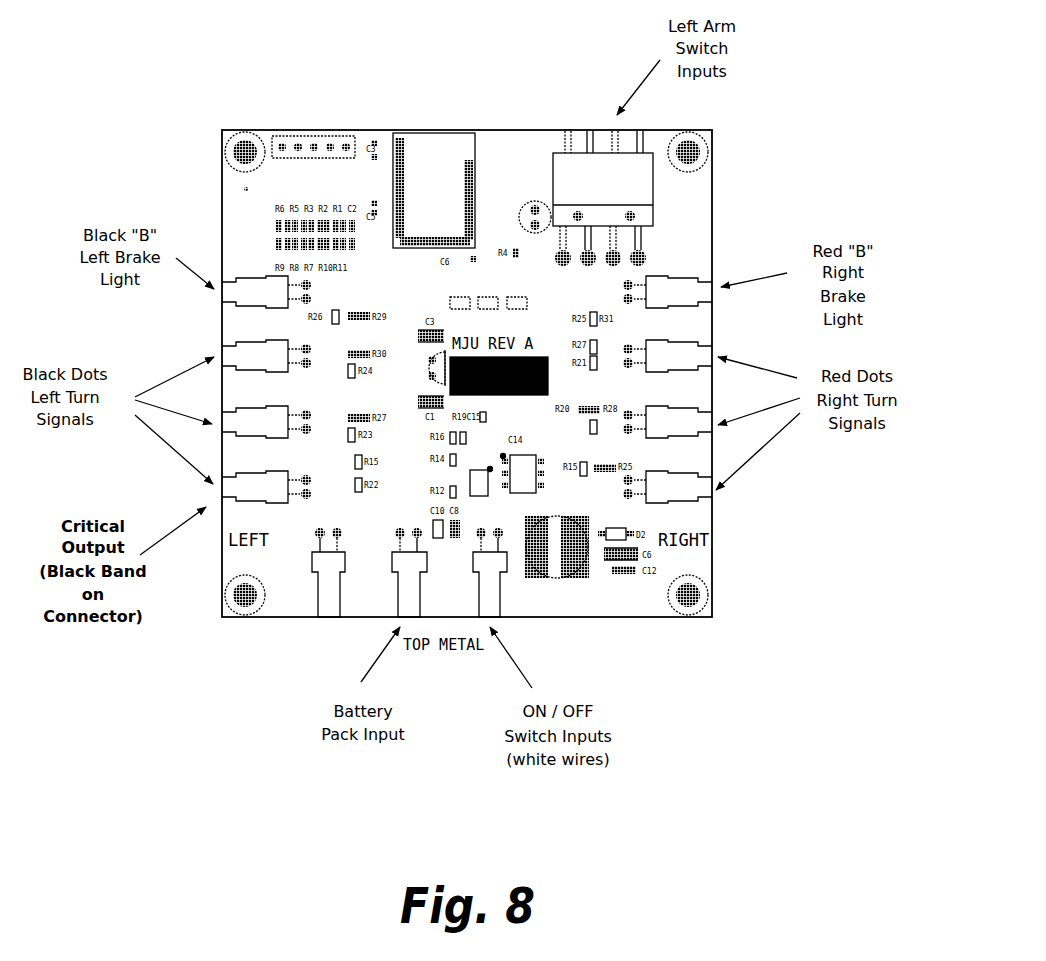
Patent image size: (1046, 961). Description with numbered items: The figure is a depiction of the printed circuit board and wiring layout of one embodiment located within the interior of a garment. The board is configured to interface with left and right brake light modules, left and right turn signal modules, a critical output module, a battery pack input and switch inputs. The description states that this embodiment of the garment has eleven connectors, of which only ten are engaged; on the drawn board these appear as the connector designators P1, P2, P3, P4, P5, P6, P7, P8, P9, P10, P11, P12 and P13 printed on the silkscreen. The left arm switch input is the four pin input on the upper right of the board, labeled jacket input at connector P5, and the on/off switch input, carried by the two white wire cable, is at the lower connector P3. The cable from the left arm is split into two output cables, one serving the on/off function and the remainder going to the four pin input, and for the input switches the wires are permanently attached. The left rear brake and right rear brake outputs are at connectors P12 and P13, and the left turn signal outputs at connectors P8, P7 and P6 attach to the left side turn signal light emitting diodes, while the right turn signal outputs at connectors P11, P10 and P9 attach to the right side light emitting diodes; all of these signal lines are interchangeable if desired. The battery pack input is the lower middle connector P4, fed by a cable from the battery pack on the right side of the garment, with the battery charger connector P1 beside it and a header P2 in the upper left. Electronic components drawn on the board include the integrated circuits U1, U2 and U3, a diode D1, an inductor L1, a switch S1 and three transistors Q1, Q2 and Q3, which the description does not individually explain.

The battery charger connector P1 is at (311, 572).
The programming header P2 is at (299, 166).
The on/off switch connector P3 is at (518, 572).
The battery pack connector P4 is at (391, 572).
The jacket input connector P5 is at (628, 198).
The left front yellow connector P6 is at (285, 494).
The left side yellow connector P7 is at (285, 429).
The left back yellow connector P8 is at (285, 363).
The right front yellow connector P9 is at (656, 494).
The right side yellow connector P10 is at (655, 429).
The right back yellow connector P11 is at (655, 363).
The left red connector P12 is at (280, 299).
The right red connector P13 is at (654, 299).
The voltage regulator U1 is at (443, 368).
The microcontroller U2 is at (442, 190).
The integrated circuit U3 is at (483, 488).
The diode D1 is at (524, 221).
The inductor L1 is at (557, 540).
The switch S1 is at (523, 481).
The transistor Q1 is at (460, 311).
The transistor Q2 is at (488, 311).
The transistor Q3 is at (517, 311).